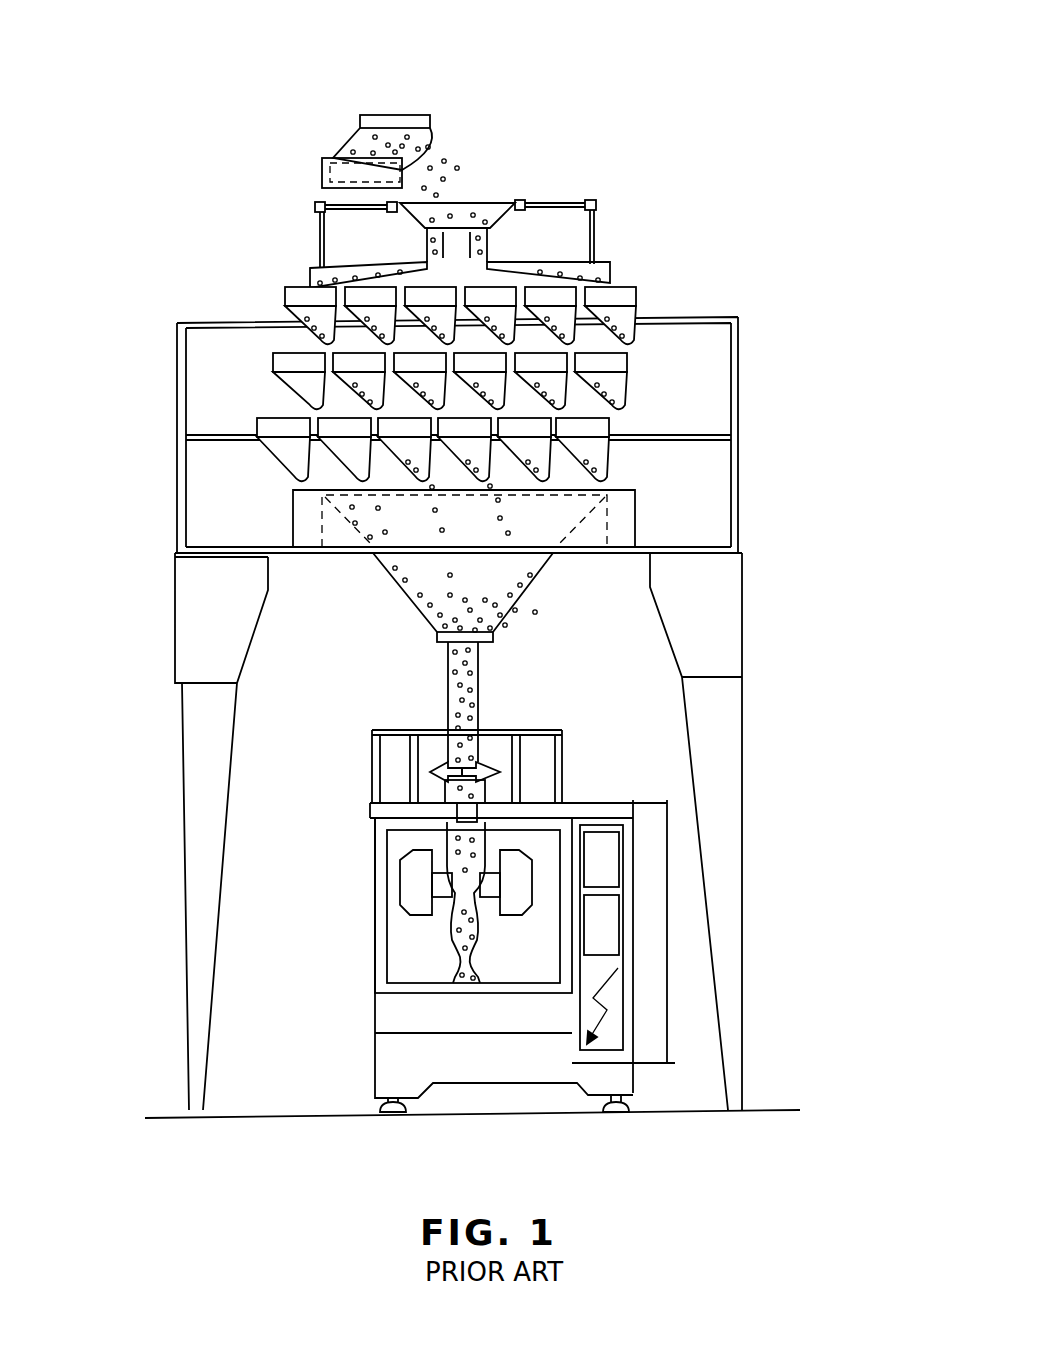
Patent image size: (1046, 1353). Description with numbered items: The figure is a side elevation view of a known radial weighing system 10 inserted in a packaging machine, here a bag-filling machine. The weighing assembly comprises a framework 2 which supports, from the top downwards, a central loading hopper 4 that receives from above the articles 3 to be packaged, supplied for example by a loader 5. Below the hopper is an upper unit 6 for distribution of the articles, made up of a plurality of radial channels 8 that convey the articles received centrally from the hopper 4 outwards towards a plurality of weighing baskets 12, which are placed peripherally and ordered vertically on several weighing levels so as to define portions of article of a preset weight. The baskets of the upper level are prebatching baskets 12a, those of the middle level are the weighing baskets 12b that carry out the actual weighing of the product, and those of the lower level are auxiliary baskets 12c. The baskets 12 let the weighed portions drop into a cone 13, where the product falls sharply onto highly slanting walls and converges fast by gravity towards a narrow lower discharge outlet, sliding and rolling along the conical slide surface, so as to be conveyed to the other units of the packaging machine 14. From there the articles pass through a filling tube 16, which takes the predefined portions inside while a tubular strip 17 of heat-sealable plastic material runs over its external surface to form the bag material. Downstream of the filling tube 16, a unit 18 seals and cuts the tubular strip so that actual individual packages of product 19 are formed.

The framework 2 is at (738, 316).
The articles 3 is at (442, 160).
The central loading hopper 4 is at (490, 210).
The loader 5 is at (410, 97).
The upper unit for distribution of the articles 6 is at (608, 247).
The radial channels 8 is at (310, 276).
The weighing system 10 is at (235, 368).
The weighing baskets 12 is at (452, 294).
The prebatching baskets 12a is at (288, 296).
The weighing baskets 12b is at (495, 383).
The auxiliary baskets 12c is at (290, 457).
The cone 13 is at (432, 573).
The other units of the packaging machine 14 is at (355, 813).
The filling tube 16 is at (482, 700).
The tubular strip 17 is at (486, 768).
The unit for sealing and cutting 18 is at (395, 880).
The individual packages of product 19 is at (448, 961).